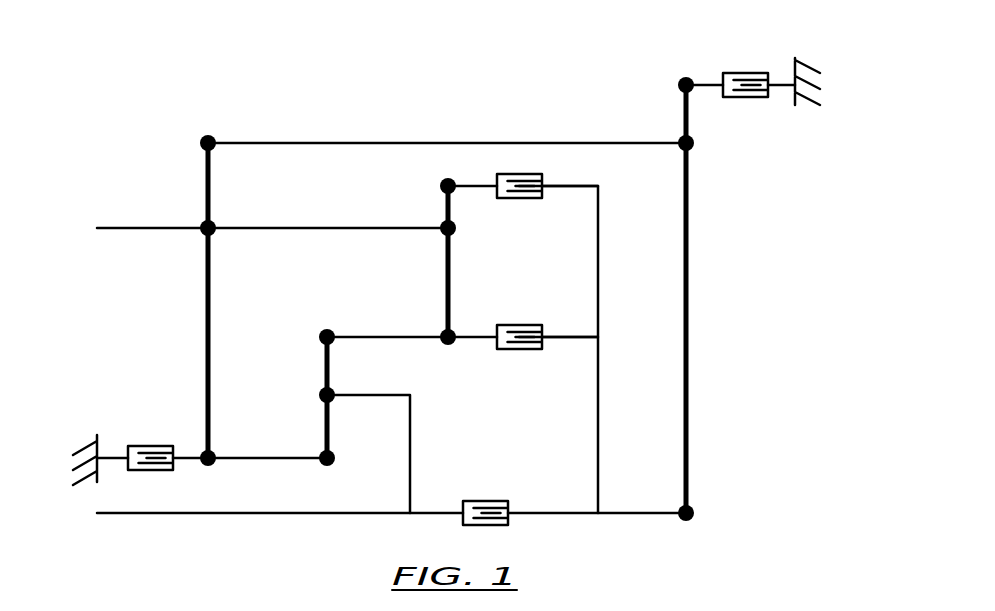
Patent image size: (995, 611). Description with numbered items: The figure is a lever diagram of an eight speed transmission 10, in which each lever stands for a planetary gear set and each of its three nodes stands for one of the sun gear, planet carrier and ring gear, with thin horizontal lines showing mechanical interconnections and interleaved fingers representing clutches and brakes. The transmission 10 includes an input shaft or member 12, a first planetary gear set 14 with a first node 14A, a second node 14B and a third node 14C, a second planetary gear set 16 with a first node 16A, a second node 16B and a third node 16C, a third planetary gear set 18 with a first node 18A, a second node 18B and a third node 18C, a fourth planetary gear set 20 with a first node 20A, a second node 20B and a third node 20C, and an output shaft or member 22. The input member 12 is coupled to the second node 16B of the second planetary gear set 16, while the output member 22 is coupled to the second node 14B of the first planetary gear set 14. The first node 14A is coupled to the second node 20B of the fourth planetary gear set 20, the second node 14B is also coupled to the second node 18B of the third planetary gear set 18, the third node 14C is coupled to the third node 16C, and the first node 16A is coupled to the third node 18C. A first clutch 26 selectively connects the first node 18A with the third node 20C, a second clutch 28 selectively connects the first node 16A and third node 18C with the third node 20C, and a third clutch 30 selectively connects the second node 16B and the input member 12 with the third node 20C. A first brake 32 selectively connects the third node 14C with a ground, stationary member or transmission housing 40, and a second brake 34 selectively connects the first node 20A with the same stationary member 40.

The eight speed transmission 10 is at (414, 108).
The input shaft or member 12 is at (152, 514).
The first planetary gear set 14 is at (189, 158).
The first node of the first planetary gear set 14A is at (213, 140).
The second node of the first planetary gear set 14B is at (214, 226).
The third node of the first planetary gear set 14C is at (213, 463).
The second planetary gear set 16 is at (343, 412).
The first node of the second planetary gear set 16A is at (323, 334).
The second node of the second planetary gear set 16B is at (322, 393).
The third node of the second planetary gear set 16C is at (322, 456).
The third planetary gear set 18 is at (449, 355).
The first node of the third planetary gear set 18A is at (444, 184).
The second node of the third planetary gear set 18B is at (453, 232).
The third node of the third planetary gear set 18C is at (444, 333).
The fourth planetary gear set 20 is at (675, 406).
The first node of the fourth planetary gear set 20A is at (681, 86).
The second node of the fourth planetary gear set 20B is at (691, 148).
The third node of the fourth planetary gear set 20C is at (692, 512).
The output shaft or member 22 is at (118, 228).
The first clutch 26 is at (519, 199).
The second clutch 28 is at (519, 350).
The third clutch 30 is at (474, 501).
The first brake 32 is at (143, 446).
The second brake 34 is at (733, 98).
The ground, stationary member, or transmission housing 40 is at (78, 446).